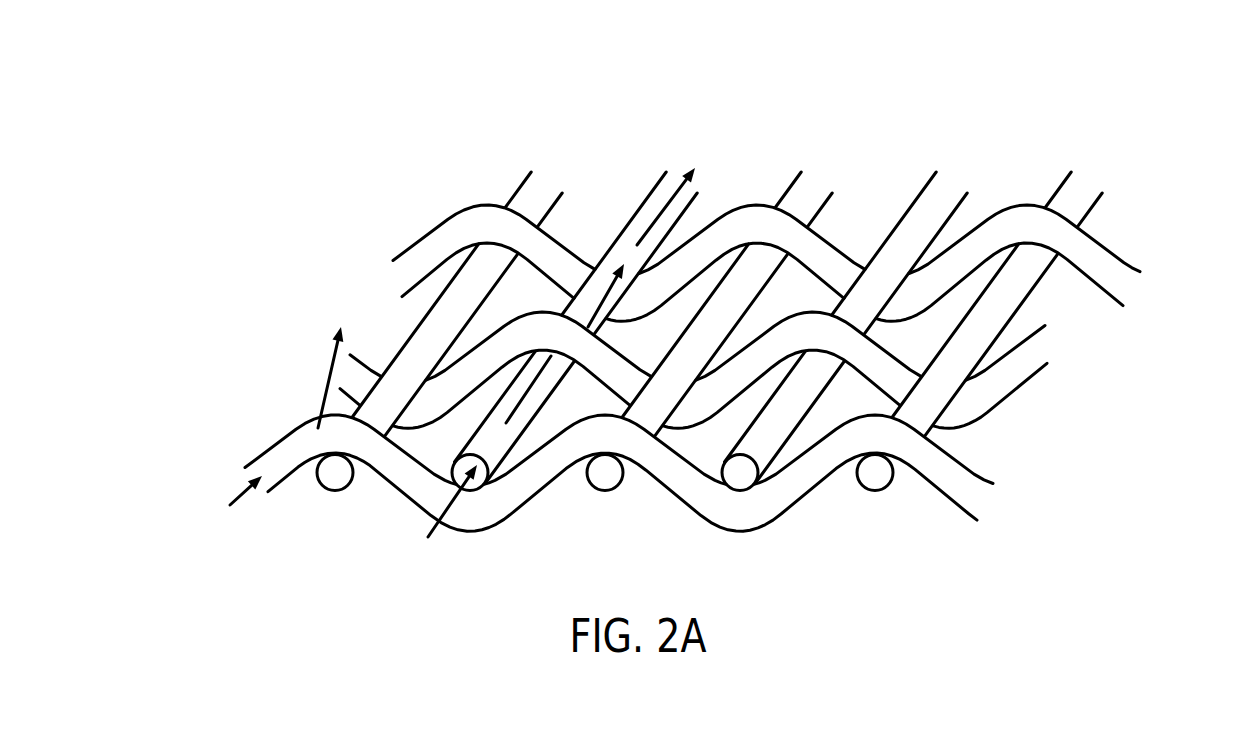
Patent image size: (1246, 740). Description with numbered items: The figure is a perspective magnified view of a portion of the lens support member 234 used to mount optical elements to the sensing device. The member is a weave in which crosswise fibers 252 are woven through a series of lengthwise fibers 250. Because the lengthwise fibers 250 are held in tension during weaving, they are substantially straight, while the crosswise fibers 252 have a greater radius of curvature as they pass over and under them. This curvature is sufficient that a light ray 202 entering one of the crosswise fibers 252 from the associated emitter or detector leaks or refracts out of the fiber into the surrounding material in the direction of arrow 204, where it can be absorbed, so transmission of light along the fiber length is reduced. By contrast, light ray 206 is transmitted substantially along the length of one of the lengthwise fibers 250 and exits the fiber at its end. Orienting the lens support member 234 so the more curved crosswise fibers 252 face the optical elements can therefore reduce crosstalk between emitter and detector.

The lens support member 234 is at (641, 283).
The lengthwise fibers 250 is at (968, 47).
The crosswise fibers 252 is at (292, 433).
The light ray 202 is at (230, 505).
The arrow 204 is at (333, 352).
The light ray 206 is at (428, 537).